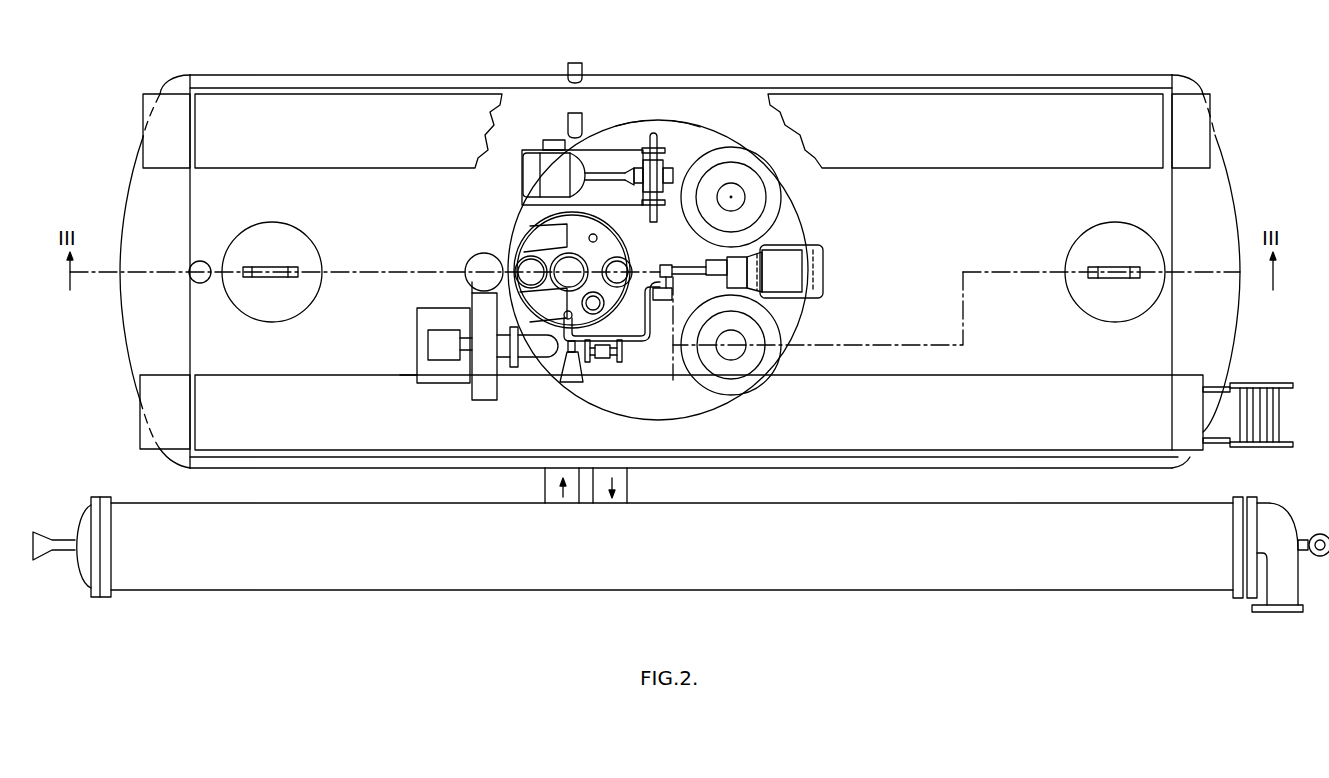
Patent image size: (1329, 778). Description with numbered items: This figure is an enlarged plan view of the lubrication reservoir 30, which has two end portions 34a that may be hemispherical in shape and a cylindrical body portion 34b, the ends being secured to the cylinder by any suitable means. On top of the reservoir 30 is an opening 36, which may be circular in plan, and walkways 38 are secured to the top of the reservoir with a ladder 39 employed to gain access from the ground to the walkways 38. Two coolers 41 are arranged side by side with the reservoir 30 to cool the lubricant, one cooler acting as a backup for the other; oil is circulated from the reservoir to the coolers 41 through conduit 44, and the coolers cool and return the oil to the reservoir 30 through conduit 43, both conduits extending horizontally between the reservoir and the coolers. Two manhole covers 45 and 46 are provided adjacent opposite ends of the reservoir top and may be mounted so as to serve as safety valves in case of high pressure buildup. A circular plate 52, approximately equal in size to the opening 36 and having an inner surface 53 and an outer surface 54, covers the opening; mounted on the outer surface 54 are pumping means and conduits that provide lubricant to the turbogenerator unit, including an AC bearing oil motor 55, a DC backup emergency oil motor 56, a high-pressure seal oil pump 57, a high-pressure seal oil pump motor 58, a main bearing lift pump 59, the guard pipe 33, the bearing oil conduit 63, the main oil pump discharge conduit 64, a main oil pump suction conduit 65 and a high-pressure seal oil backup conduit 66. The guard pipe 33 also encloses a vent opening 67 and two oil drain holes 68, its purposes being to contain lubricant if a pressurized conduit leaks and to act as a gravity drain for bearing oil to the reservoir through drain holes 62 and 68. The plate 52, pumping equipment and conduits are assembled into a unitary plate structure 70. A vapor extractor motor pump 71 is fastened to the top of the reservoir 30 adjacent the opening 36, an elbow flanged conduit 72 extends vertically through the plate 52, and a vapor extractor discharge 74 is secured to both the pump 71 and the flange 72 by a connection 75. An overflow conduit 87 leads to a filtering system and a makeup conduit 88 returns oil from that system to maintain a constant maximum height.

The reservoir 30 is at (718, 73).
The guard pipe 33 is at (543, 232).
The end portions 34a is at (128, 180).
The cylindrical body portion 34b is at (515, 88).
The opening 36 is at (716, 142).
The walkways 38 is at (1035, 100).
The ladder 39 is at (1268, 450).
The coolers 41 is at (945, 590).
The conduit 43 is at (545, 482).
The conduit 44 is at (627, 492).
The manhole cover 45 is at (322, 243).
The manhole cover 46 is at (1085, 244).
The plate 52 is at (785, 325).
The inner surface 53 is at (680, 128).
The outer surface 54 is at (634, 128).
The AC bearing oil motor 55 is at (752, 372).
The DC backup emergency oil motor 56 is at (765, 197).
The high-pressure seal oil pump 57 is at (702, 160).
The high-pressure seal oil pump motor 58 is at (553, 165).
The main bearing lift pump 59 is at (823, 262).
The drain holes 62 is at (533, 300).
The bearing oil conduit 63 is at (520, 262).
The main oil pump discharge conduit 64 is at (503, 262).
The main oil pump suction conduit 65 is at (628, 265).
The high-pressure seal oil backup conduit 66 is at (605, 305).
The vent opening 67 is at (598, 238).
The oil drain holes 68 is at (545, 222).
The unitary plate structure 70 is at (718, 408).
The vapor extractor motor pump 71 is at (435, 343).
The elbow flanged conduit 72 is at (545, 350).
The vapor extractor discharge 74 is at (468, 283).
The connection 75 is at (514, 368).
The overflow conduit 87 is at (582, 65).
The makeup conduit 88 is at (582, 118).